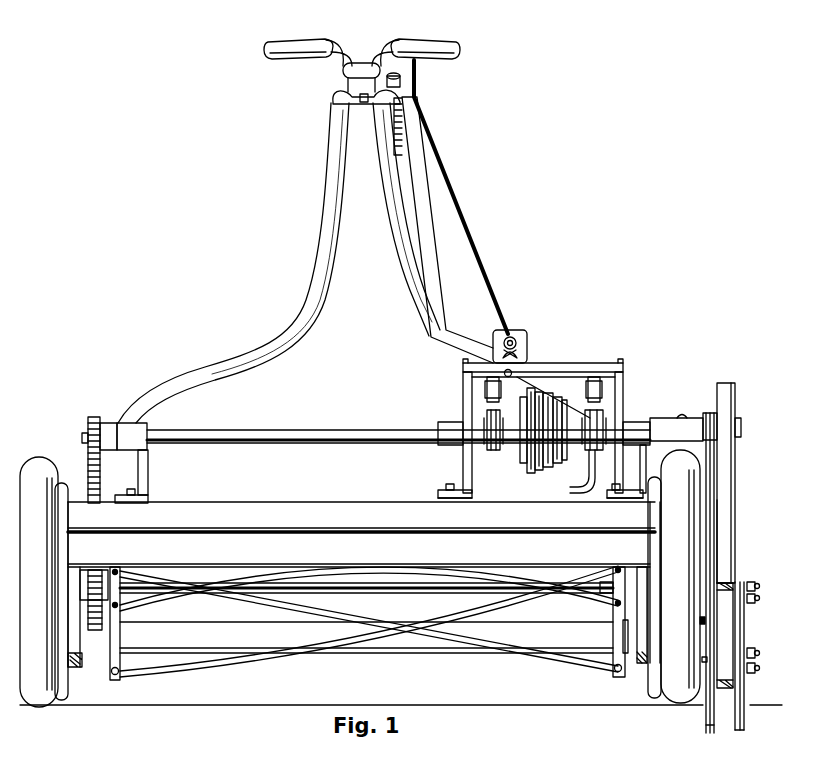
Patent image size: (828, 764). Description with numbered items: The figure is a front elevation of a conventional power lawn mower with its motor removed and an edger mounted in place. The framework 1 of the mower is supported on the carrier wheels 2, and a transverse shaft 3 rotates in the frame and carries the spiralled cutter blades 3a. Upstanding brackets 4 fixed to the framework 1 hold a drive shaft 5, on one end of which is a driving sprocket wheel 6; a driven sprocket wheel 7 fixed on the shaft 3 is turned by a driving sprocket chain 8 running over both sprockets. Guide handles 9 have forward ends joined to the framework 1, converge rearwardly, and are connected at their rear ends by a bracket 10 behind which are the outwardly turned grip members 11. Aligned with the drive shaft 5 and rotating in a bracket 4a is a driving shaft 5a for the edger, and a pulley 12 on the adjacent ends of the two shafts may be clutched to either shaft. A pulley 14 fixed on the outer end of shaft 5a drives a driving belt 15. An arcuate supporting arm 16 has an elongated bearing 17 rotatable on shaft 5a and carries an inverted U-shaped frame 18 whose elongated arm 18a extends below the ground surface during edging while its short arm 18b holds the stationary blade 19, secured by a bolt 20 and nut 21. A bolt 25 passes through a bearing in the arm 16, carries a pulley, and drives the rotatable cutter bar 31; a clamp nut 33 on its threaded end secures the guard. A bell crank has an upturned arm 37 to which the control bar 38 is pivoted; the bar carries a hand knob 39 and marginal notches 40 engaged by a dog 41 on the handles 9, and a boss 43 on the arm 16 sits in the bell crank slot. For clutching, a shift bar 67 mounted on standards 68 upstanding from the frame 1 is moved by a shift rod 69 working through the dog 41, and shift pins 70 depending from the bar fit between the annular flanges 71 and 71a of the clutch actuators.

The framework 1 is at (303, 495).
The carrier wheel 2 is at (39, 456).
The transverse shaft 3 is at (382, 594).
The cutter blade 3a is at (246, 658).
The upstanding bracket 4 is at (148, 462).
The bracket 4a is at (637, 476).
The drive shaft 5 is at (357, 429).
The driving shaft 5a is at (743, 426).
The driving sprocket wheel 6 is at (108, 420).
The driven sprocket wheel 7 is at (89, 633).
The driving sprocket chain 8 is at (88, 457).
The guide handle 9 is at (327, 204).
The bracket 10 is at (361, 60).
The grip member 11 is at (295, 58).
The pulley 12 is at (526, 480).
The pulley 14 is at (738, 386).
The driving belt 15 is at (738, 527).
The arcuate supporting arm 16 is at (713, 490).
The elongated bearing 17 is at (666, 417).
The frame 18 is at (749, 575).
The frame arm 18a is at (707, 733).
The frame arm 18b is at (738, 581).
The stationary blade 19 is at (741, 637).
The bolt 20 is at (759, 588).
The securing nut 21 is at (759, 600).
The bolt 25 is at (759, 656).
The rotatable cutter bar 31 is at (741, 731).
The clamp nut 33 is at (759, 670).
The arm 37 is at (590, 492).
The control bar 38 is at (424, 212).
The hand knob 39 is at (403, 81).
The marginal notch 40 is at (404, 147).
The dog 41 is at (386, 108).
The boss 43 is at (700, 621).
The shift bar 67 is at (576, 364).
The standard 68 is at (462, 405).
The shift rod 69 is at (506, 314).
The shift pin 70 is at (487, 392).
The annular flange 71 is at (483, 452).
The annular flange 71a is at (590, 460).